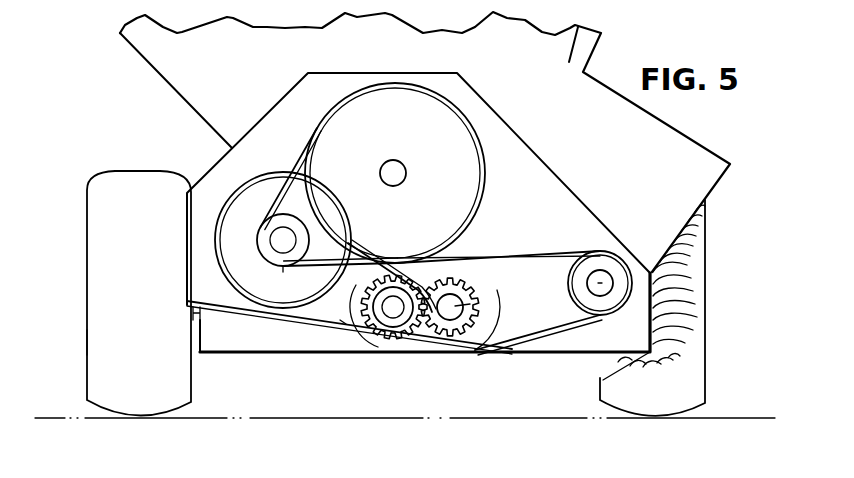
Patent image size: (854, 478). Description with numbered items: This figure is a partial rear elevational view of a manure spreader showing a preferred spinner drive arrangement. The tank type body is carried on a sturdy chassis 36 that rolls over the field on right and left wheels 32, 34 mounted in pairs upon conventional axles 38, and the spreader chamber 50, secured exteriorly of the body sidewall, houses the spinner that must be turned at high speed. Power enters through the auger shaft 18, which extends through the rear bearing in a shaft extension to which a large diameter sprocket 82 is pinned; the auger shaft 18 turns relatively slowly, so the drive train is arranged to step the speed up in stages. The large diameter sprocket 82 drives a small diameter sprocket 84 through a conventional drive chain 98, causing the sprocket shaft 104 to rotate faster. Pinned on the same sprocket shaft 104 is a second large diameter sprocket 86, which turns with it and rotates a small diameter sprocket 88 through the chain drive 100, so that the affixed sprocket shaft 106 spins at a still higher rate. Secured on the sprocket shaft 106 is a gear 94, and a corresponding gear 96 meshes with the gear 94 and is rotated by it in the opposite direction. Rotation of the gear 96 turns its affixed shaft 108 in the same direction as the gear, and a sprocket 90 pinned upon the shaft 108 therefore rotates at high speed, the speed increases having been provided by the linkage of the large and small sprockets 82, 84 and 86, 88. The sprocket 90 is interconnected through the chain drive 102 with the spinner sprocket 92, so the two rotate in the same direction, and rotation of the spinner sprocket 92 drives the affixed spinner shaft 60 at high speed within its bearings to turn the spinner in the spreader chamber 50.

The auger shaft 18 is at (402, 176).
The right wheel 32 is at (692, 363).
The left wheel 34 is at (100, 374).
The chassis 36 is at (220, 338).
The axle 38 is at (88, 341).
The spreader chamber 50 is at (692, 236).
The spinner shaft 60 is at (602, 290).
The large diameter sprocket 82 is at (381, 106).
The small diameter sprocket 84 is at (283, 268).
The large diameter sprocket 86 is at (217, 213).
The small diameter sprocket 88 is at (403, 315).
The sprocket 90 is at (433, 320).
The spinner sprocket 92 is at (585, 303).
The gear 94 is at (343, 322).
The gear 96 is at (470, 304).
The drive chain 98 is at (305, 147).
The chain drive 100 is at (312, 320).
The chain drive 102 is at (550, 257).
The sprocket shaft 104 is at (283, 226).
The sprocket shaft 106 is at (388, 320).
The shaft 108 is at (503, 322).